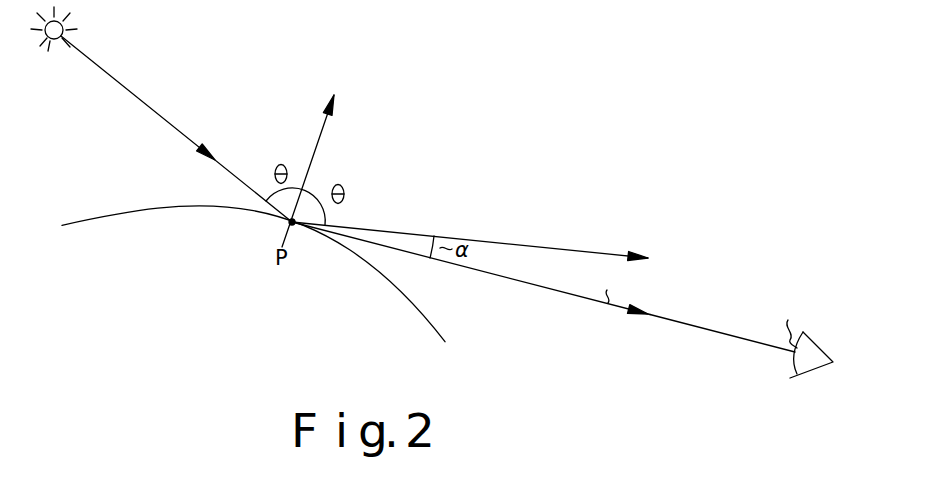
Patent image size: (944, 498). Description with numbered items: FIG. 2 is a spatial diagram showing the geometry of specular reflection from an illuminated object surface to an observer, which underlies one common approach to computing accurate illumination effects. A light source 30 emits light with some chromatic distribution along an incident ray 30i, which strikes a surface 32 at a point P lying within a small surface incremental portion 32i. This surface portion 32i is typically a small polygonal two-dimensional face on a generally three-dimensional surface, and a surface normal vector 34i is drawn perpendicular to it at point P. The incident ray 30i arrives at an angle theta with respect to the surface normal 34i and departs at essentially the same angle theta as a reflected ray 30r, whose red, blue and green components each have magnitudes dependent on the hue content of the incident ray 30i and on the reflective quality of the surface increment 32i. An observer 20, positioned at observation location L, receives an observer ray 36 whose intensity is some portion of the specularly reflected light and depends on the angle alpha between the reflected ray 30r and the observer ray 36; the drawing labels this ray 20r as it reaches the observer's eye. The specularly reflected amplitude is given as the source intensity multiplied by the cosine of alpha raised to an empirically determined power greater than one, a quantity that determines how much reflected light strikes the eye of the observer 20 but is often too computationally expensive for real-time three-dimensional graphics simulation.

The observer 20 is at (812, 377).
The ray toward observer 20r is at (697, 330).
The light source 30 is at (43, 47).
The incident ray 30i is at (170, 120).
The reflected ray 30r is at (583, 250).
The surface 32 is at (90, 220).
The surface incremental portion 32i is at (285, 218).
The surface normal vector 34i is at (323, 133).
The observer ray 36 is at (607, 307).